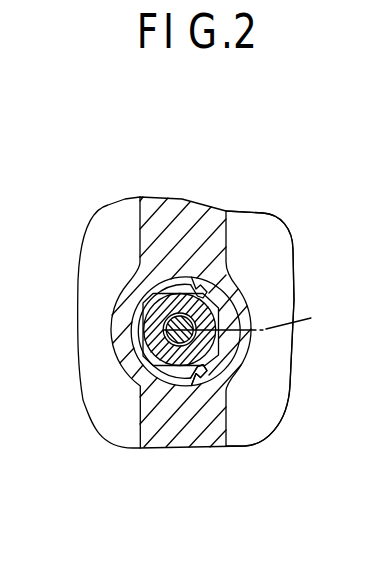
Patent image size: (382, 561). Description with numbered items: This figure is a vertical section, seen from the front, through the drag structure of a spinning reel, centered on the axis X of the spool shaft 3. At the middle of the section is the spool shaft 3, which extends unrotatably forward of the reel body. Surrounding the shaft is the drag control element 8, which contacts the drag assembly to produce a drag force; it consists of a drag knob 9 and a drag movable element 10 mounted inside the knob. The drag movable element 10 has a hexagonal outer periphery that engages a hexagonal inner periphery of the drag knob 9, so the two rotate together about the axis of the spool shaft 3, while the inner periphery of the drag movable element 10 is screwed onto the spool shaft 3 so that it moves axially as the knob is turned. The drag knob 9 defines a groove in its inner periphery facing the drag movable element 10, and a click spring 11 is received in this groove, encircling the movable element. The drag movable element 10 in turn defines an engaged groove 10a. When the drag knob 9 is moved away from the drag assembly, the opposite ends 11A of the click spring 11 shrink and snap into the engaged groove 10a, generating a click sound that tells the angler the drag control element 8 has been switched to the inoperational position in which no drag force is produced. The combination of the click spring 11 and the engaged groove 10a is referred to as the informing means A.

The drag control element 8 is at (322, 143).
The drag knob 9 is at (241, 225).
The drag movable element 10 is at (237, 281).
The engaged groove 10a is at (166, 368).
The click spring 11 is at (133, 376).
The opposite ends of the click spring 11A is at (195, 383).
The spool shaft 3 is at (217, 359).
The axis X is at (247, 314).
The informing means A is at (143, 484).